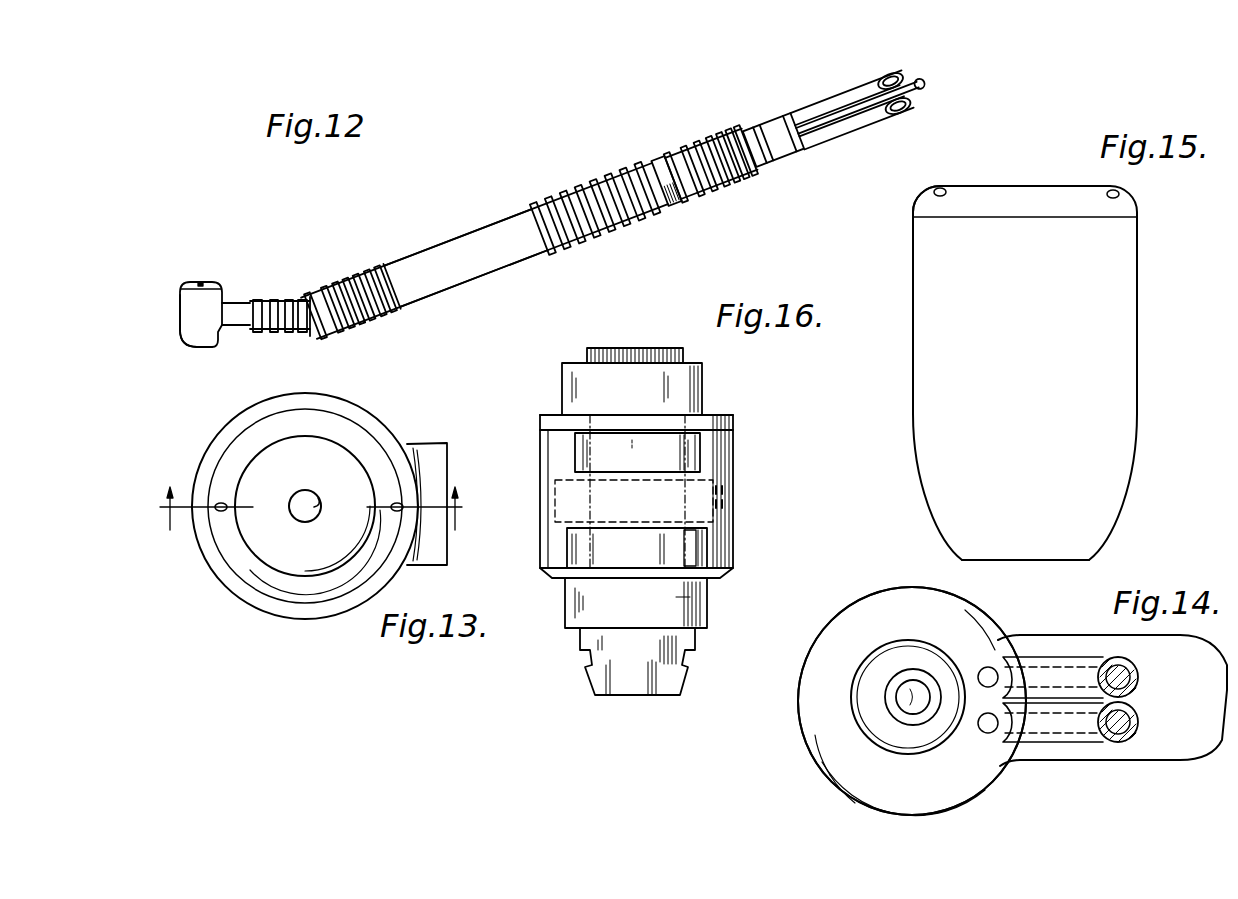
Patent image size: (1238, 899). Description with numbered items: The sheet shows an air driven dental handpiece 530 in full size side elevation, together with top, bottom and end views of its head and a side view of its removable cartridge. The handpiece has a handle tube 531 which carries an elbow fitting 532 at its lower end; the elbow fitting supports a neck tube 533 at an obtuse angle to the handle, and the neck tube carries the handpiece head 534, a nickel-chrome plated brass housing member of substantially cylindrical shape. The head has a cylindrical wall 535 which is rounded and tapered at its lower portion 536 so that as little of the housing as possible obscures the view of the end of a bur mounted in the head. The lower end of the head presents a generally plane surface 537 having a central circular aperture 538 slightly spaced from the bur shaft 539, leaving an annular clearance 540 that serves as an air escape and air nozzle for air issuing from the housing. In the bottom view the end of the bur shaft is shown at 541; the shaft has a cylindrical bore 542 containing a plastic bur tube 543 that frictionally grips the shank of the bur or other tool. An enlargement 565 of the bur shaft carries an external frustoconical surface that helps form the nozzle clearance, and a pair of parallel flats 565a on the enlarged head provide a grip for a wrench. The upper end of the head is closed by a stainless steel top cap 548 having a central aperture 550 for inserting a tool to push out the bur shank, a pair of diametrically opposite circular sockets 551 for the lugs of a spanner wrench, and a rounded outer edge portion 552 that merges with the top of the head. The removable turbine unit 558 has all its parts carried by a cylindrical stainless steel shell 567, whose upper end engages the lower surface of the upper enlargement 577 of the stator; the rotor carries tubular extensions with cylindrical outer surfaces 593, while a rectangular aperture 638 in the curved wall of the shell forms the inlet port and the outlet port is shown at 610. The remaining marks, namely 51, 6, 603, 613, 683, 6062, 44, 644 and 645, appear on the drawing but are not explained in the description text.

In FIG. 12, the air driven handpiece 530 is at (460, 227).
In FIG. 12, the handle tube 531 is at (503, 237).
In FIG. 12, the elbow fitting 532 is at (318, 330).
In FIG. 12, the neck tube 533 is at (236, 305).
In FIG. 13, the neck tube 533 is at (433, 470).
In FIG. 14, the neck tube 533 is at (1097, 628).
In FIG. 12, the handpiece head 534 is at (188, 300).
In FIG. 13, the handpiece head 534 is at (203, 456).
In FIG. 15, the handpiece head 534 is at (1124, 272).
In FIG. 12, the cylindrical wall 535 is at (181, 320).
In FIG. 15, the cylindrical wall 535 is at (915, 363).
In FIG. 12, the lower portion 536 is at (184, 342).
In FIG. 15, the lower portion 536 is at (1117, 514).
In FIG. 12, the plane surface 537 is at (202, 348).
In FIG. 15, the plane surface 537 is at (1062, 559).
In FIG. 14, the plane surface 537 is at (937, 652).
In FIG. 12, the top cap 548 is at (190, 282).
In FIG. 13, the top cap 548 is at (369, 445).
In FIG. 15, the top cap 548 is at (1062, 182).
In FIG. 13, the central aperture 550 is at (318, 500).
In FIG. 13, the circular sockets 551 is at (225, 505).
In FIG. 15, the circular sockets 551 is at (1119, 194).
In FIG. 15, the outer edge portion 552 is at (920, 206).
In FIG. 15, the slot 51 is at (946, 191).
In FIG. 13, the section line 6- 6 is at (312, 513).
In FIG. 16, the knurled cap 603 is at (684, 355).
In FIG. 16, the upper housing 613 is at (692, 386).
In FIG. 16, the upper enlargement 577 is at (734, 419).
In FIG. 16, the turbine unit 558 is at (760, 456).
In FIG. 16, the cylindrical shell 567 is at (548, 441).
In FIG. 16, the rectangular aperture 638 is at (622, 471).
In FIG. 16, the lock pins 683 is at (737, 496).
In FIG. 16, the cylindrical outer surfaces 593 is at (600, 549).
In FIG. 16, the outlet port 610 is at (690, 550).
In FIG. 16, the lower body 6062 is at (708, 595).
In FIG. 16, the parallel flats 565a is at (680, 667).
In FIG. 16, the enlargement 565 is at (646, 688).
In FIG. 14, the bur shaft 539 is at (888, 669).
In FIG. 14, the annular clearance 540 is at (906, 648).
In FIG. 14, the central circular aperture 538 is at (918, 652).
In FIG. 14, the end of the bur shaft 541 is at (882, 703).
In FIG. 14, the cylindrical bore 542 is at (900, 718).
In FIG. 14, the plastic bur tube 543 is at (915, 720).
In FIG. 14, the central opening 44 is at (915, 697).
In FIG. 14, the upper passage 644 is at (1032, 668).
In FIG. 14, the lower passage 645 is at (1046, 734).